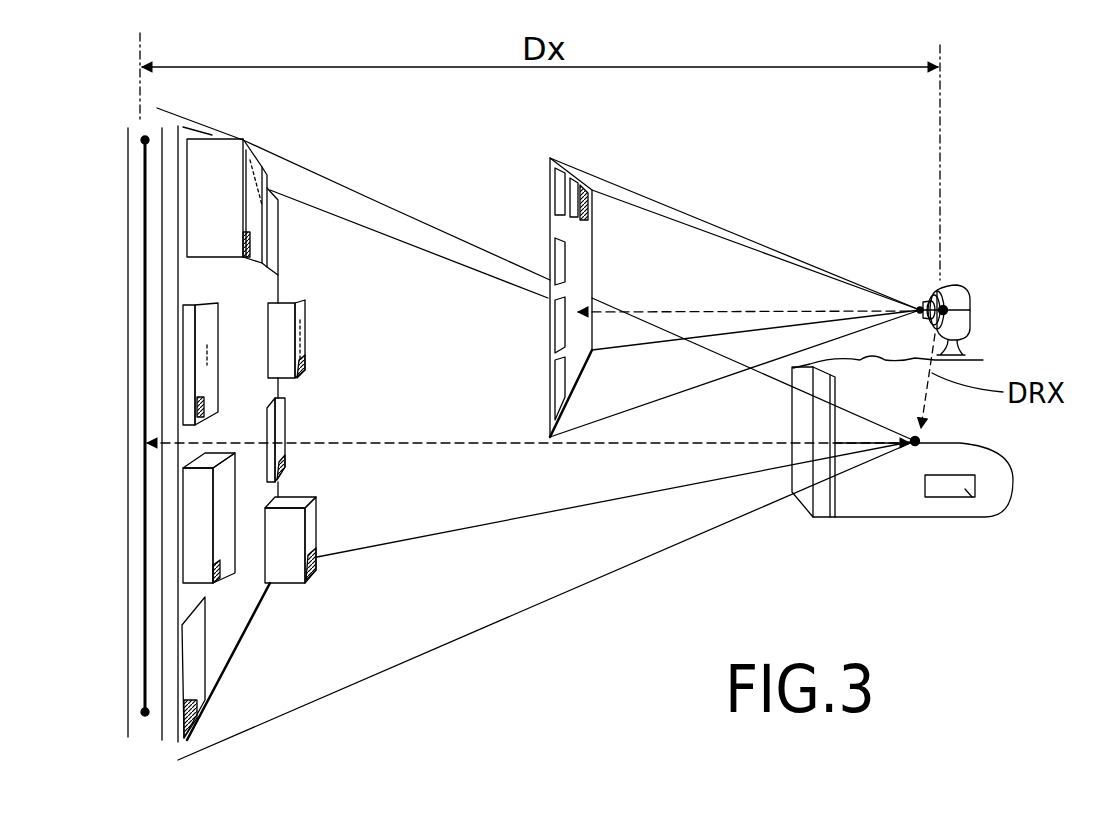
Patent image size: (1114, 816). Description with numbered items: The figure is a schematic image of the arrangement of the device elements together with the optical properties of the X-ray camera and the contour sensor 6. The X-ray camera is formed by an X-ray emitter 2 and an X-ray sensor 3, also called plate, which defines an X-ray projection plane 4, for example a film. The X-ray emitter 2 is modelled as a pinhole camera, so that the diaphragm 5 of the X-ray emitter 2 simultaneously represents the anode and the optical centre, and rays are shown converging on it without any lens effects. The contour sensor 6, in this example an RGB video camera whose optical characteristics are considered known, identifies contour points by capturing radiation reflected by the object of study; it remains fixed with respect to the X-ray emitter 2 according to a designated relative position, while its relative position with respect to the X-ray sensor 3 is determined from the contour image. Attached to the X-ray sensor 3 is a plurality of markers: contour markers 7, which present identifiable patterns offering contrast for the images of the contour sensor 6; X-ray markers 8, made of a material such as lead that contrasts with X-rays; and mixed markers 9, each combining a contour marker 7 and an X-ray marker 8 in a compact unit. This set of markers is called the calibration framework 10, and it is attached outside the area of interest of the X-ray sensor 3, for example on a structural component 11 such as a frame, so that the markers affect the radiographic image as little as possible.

The X-ray emitter 2 is at (940, 428).
The X-ray sensor 3 is at (168, 105).
The X-ray projection plane 4 is at (144, 265).
The diaphragm 5 is at (914, 445).
The contour sensor 6 is at (957, 295).
The contour markers 7 is at (250, 180).
The X-ray markers 8 is at (243, 240).
The mixed markers 9 is at (224, 161).
The calibration framework 10 is at (279, 600).
The structural component 11 is at (136, 353).